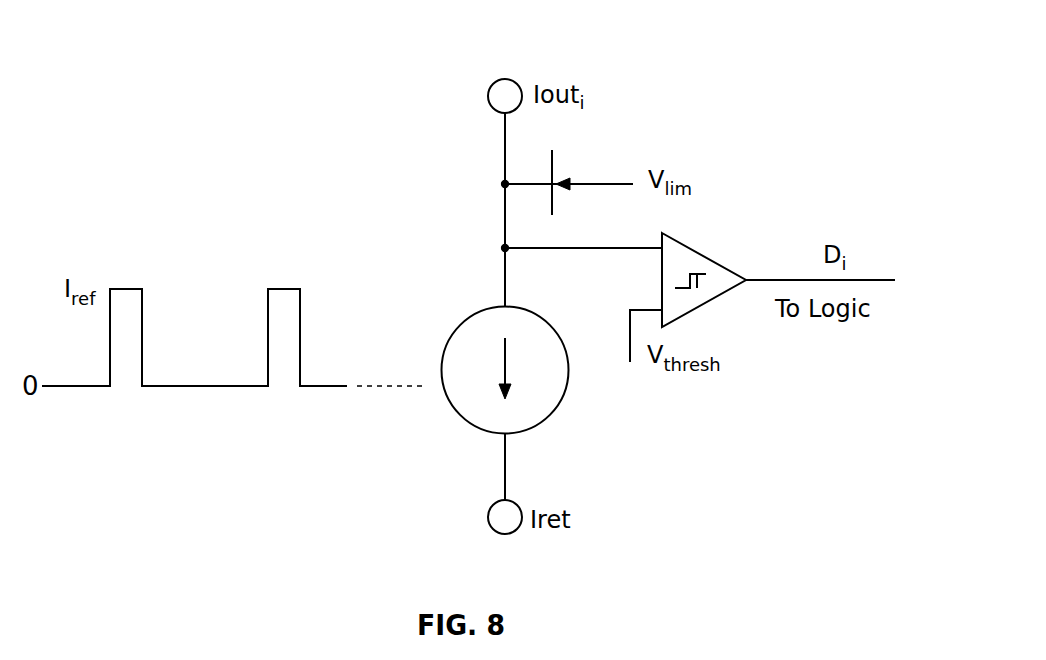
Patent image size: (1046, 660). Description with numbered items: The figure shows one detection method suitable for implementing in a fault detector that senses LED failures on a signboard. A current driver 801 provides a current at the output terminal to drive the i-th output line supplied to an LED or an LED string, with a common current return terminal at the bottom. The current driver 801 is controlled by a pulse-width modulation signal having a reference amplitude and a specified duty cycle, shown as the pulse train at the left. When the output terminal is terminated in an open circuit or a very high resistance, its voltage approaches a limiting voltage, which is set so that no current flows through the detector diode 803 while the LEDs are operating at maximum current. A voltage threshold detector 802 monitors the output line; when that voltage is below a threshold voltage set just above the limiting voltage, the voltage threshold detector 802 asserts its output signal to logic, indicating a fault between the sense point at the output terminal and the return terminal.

The current driver 801 is at (561, 404).
The voltage threshold detector 802 is at (702, 253).
The detector diode 803 is at (590, 183).